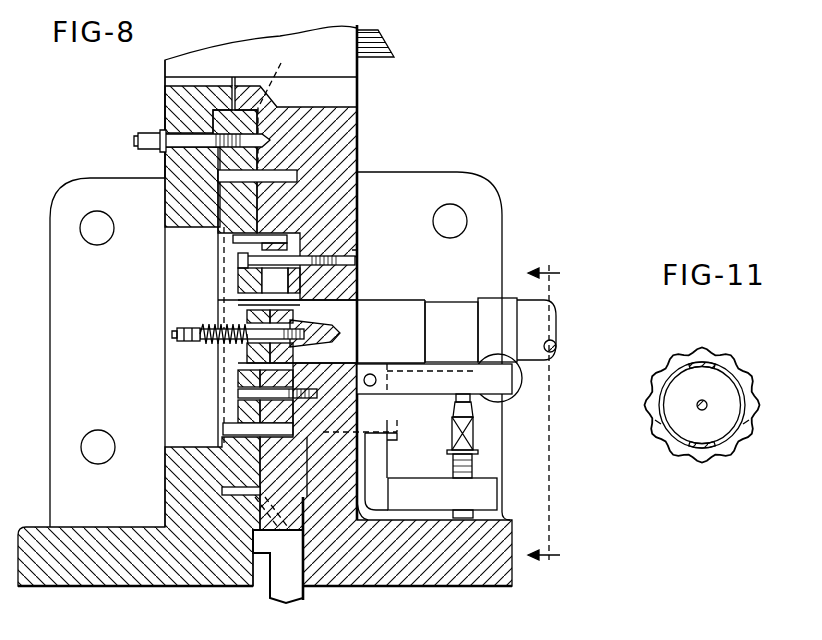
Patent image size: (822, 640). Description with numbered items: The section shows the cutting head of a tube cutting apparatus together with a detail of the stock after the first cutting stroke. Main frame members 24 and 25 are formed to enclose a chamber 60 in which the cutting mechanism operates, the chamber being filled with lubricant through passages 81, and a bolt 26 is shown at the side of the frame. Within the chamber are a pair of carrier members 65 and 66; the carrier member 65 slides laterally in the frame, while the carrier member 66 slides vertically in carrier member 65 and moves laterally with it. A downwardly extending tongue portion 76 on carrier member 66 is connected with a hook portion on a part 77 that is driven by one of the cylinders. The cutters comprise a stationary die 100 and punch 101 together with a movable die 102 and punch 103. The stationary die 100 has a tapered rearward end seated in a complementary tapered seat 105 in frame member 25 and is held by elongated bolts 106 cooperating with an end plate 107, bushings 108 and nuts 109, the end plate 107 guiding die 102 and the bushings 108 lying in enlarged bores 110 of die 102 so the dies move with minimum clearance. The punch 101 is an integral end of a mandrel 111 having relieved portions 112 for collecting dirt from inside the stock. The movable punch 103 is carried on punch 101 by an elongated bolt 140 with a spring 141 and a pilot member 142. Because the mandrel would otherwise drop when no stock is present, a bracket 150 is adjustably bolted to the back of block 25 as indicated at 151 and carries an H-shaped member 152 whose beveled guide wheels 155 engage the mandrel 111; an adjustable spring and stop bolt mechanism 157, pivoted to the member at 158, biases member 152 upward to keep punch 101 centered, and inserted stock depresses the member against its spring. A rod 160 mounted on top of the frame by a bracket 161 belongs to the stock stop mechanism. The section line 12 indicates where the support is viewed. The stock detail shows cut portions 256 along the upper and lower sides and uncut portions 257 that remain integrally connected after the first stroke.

In FIG. 8, the section line 12 is at (558, 414).
In FIG. 8, the main frame member 24 is at (112, 572).
In FIG. 8, the main frame member 25 is at (384, 573).
In FIG. 8, the bolt 26 is at (152, 138).
In FIG. 8, the chamber 60 is at (356, 147).
In FIG. 8, the carrier member 65 is at (227, 196).
In FIG. 8, the carrier member 66 is at (300, 175).
In FIG. 8, the tongue portion 76 is at (240, 572).
In FIG. 8, the part 77 is at (288, 592).
In FIG. 8, the passage 81 is at (277, 105).
In FIG. 8, the stationary die 100 is at (352, 278).
In FIG. 11, the stationary die 100 is at (738, 377).
In FIG. 8, the punch 101 is at (323, 312).
In FIG. 11, the punch 101 is at (683, 430).
In FIG. 8, the movable die 102 is at (263, 288).
In FIG. 8, the movable punch 103 is at (260, 307).
In FIG. 8, the tapered seat 105 is at (318, 238).
In FIG. 8, the elongated bolt 106 is at (240, 260).
In FIG. 8, the end plate 107 is at (243, 378).
In FIG. 8, the bushing 108 is at (237, 238).
In FIG. 8, the nut 109 is at (358, 248).
In FIG. 8, the enlarged bore 110 is at (240, 427).
In FIG. 8, the mandrel 111 is at (542, 322).
In FIG. 8, the relieved portion 112 is at (522, 302).
In FIG. 8, the elongated bolt 140 is at (176, 334).
In FIG. 11, the elongated bolt 140 is at (697, 403).
In FIG. 8, the spring 141 is at (217, 327).
In FIG. 8, the pilot member 142 is at (250, 355).
In FIG. 8, the bracket 150 is at (490, 490).
In FIG. 8, the bolting 151 is at (387, 437).
In FIG. 8, the H-shaped member 152 is at (402, 377).
In FIG. 8, the beveled guide wheel 155 is at (521, 383).
In FIG. 8, the adjustable spring and stop bolt mechanism 157 is at (482, 438).
In FIG. 8, the pivot 158 is at (458, 367).
In FIG. 8, the rod 160 is at (376, 40).
In FIG. 8, the bracket 161 is at (362, 61).
In FIG. 11, the cut portion 256 is at (656, 422).
In FIG. 11, the uncut portion 257 is at (702, 364).